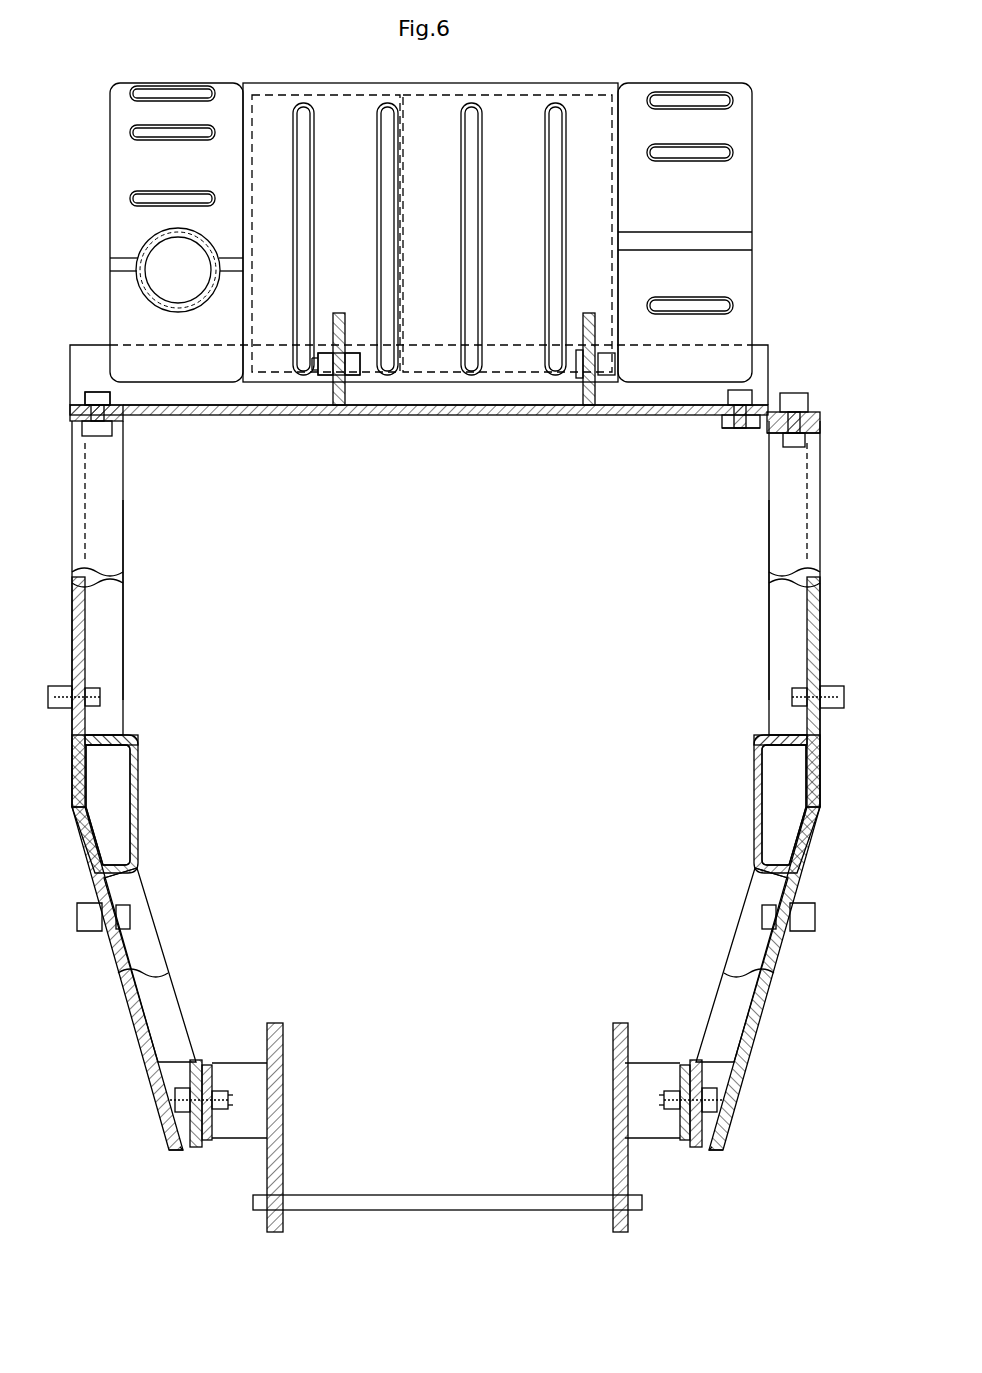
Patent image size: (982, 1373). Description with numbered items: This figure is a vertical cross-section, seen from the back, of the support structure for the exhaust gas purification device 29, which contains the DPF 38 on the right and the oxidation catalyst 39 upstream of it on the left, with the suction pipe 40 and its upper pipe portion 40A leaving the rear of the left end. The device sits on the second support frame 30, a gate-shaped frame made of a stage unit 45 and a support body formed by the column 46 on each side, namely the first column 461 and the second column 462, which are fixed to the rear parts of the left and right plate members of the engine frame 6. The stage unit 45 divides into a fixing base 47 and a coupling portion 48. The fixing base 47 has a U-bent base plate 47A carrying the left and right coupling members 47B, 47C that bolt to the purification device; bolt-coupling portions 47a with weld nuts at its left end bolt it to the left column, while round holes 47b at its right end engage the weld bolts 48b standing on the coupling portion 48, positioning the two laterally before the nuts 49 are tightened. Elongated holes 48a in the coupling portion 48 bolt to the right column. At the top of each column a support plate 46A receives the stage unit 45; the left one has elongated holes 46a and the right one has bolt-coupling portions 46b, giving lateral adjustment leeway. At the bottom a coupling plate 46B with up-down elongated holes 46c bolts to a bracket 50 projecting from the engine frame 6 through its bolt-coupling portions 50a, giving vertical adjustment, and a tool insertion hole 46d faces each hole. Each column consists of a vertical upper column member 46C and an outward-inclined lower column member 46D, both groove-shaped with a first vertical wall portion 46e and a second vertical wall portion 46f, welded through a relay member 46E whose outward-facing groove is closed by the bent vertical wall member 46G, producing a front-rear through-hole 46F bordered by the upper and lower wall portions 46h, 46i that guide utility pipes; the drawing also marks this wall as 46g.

The engine frame 6 is at (612, 1060).
The exhaust gas purification device 29 is at (449, 211).
The second support frame 30 is at (501, 1120).
The DPF 38 is at (527, 95).
The oxidation catalyst 39 is at (332, 95).
The suction pipe 40 is at (141, 233).
The upper pipe portion 40A is at (145, 243).
The stage unit 45 is at (770, 345).
The column 46 is at (452, 792).
The first column 461 is at (421, 932).
The second column 462 is at (768, 996).
The support plate 46A is at (128, 422).
The coupling plate 46B is at (203, 1060).
The upper column member 46C is at (446, 699).
The lower column member 46D is at (446, 954).
The relay member 46E is at (446, 777).
The through-hole 46F is at (112, 804).
The vertical wall member 46G is at (446, 743).
The elongated hole 46a is at (100, 392).
The bolt-coupling portion 46b is at (796, 450).
The elongated hole 46c is at (176, 1100).
The tool insertion hole 46d is at (163, 1132).
The first vertical wall portion 46e is at (110, 590).
The second vertical wall portion 46f is at (105, 520).
The top wall 46g is at (105, 752).
The upper wall portion 46h is at (105, 735).
The lower wall portion 46i is at (125, 878).
The fixing base 47 is at (410, 403).
The base plate 47A is at (390, 416).
The left coupling member 47B is at (333, 400).
The right coupling member 47C is at (587, 408).
The bolt-coupling portion 47a is at (96, 392).
The round hole 47b is at (740, 396).
The coupling portion 48 is at (722, 422).
The elongated hole 48a is at (795, 392).
The weld bolt 48b is at (740, 428).
The nut 49 is at (675, 371).
The bracket 50 is at (446, 1101).
The bolt-coupling portion 50a is at (218, 1112).